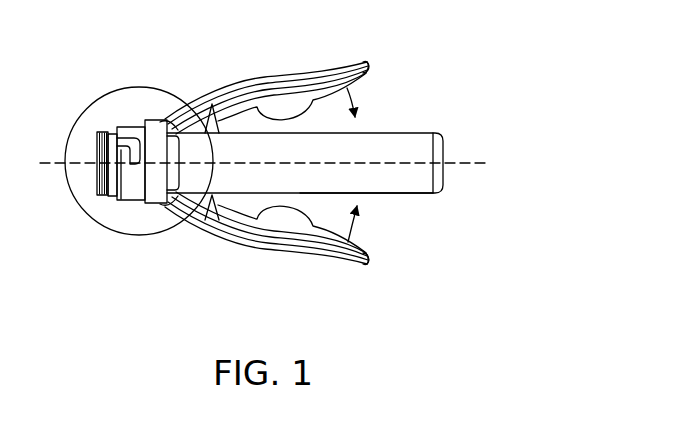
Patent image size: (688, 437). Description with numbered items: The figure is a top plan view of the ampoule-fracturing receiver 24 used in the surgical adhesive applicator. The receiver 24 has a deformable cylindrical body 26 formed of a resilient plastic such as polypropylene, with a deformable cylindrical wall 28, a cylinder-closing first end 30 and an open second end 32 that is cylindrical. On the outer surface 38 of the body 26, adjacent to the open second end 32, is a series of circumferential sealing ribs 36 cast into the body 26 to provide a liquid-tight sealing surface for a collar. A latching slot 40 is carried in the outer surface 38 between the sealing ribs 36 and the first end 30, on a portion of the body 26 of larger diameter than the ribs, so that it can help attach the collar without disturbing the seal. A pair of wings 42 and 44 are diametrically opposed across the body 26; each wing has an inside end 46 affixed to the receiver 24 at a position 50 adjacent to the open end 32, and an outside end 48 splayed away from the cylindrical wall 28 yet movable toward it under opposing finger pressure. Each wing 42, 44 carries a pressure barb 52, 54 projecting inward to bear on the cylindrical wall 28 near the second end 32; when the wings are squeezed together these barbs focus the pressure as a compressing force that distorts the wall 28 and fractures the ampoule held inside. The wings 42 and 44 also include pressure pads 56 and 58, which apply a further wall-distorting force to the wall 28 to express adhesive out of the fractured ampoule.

The receiver 24 is at (425, 91).
The deformable cylindrical body 26 is at (377, 132).
The deformable cylindrical wall 28 is at (393, 195).
The cylinder-closing first end 30 is at (443, 148).
The open second end 32 is at (97, 140).
The circumferential sealing ribs 36 is at (112, 197).
The outer surface 38 is at (127, 200).
The latching slot 40 is at (117, 134).
The wing 42 is at (282, 86).
The wing 44 is at (303, 253).
The inside end 46 is at (178, 98).
The outside end 48 is at (366, 61).
The position 50 is at (163, 119).
The pressure barb 52 is at (215, 106).
The pressure barb 54 is at (213, 237).
The pressure pad 56 is at (277, 118).
The pressure pad 58 is at (278, 208).